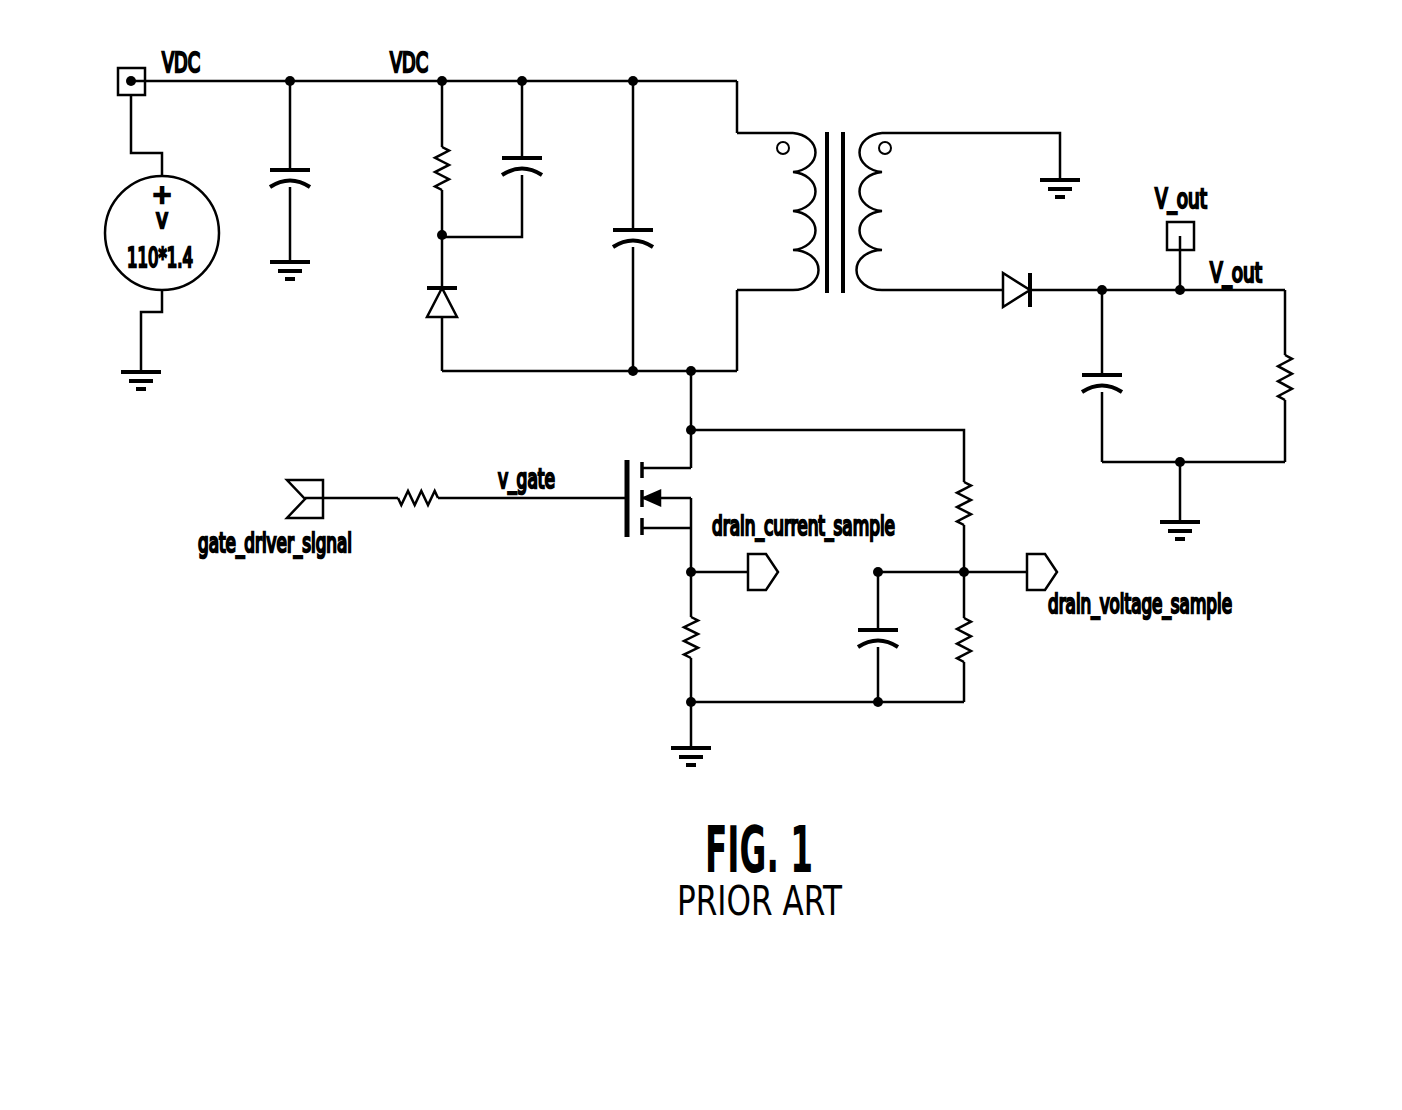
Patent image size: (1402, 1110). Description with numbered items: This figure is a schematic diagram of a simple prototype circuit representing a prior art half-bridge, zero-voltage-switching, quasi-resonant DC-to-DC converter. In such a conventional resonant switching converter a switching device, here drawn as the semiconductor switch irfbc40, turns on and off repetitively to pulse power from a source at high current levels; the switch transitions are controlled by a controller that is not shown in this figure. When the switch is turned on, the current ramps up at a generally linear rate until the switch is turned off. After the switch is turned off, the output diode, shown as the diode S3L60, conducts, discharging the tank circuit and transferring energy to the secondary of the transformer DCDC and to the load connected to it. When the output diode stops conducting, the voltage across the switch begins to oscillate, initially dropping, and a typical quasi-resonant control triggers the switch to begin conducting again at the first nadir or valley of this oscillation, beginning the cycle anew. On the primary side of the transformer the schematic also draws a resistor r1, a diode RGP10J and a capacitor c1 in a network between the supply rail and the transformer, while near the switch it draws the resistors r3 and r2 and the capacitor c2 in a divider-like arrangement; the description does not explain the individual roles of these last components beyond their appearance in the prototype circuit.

The resistor r1 68k r1 is at (422, 160).
The diode RGP10J is at (398, 303).
The capacitor c1 47n c1 is at (510, 159).
The DC/DC transformer DCDC is at (843, 194).
The output diode S3L60 is at (1083, 275).
The MOSFET irfbc40_sl irfbc40 is at (623, 471).
The resistor r3 141k r3 is at (855, 485).
The resistor r2 0.5k r2 is at (987, 637).
The capacitor c2 47p c2 is at (860, 637).